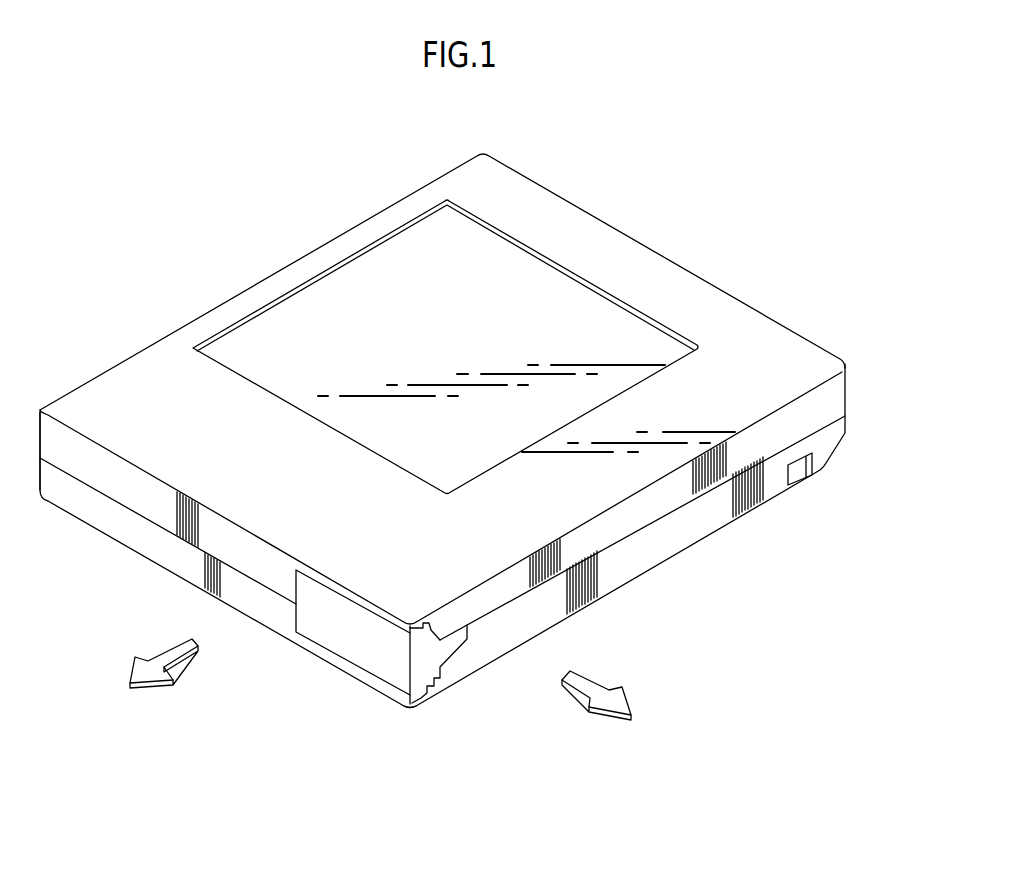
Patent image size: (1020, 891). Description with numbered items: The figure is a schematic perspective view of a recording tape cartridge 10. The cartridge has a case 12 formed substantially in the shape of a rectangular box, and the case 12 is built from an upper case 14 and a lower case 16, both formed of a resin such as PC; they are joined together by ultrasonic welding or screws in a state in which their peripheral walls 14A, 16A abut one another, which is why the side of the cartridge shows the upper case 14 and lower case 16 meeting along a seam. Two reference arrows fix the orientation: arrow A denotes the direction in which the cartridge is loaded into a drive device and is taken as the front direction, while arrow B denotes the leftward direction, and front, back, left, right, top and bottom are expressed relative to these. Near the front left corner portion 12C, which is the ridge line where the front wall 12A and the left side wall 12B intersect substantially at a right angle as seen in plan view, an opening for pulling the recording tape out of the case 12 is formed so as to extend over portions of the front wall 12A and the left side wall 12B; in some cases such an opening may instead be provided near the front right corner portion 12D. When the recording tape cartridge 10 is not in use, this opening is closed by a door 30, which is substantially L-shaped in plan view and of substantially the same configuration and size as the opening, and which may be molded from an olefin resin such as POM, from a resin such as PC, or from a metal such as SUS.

The recording tape cartridge 10 is at (566, 128).
The case 12 is at (708, 597).
The front wall 12A is at (250, 567).
The left side wall 12B is at (600, 537).
The front left corner portion 12C is at (410, 706).
The front right corner portion 12D is at (40, 410).
The upper case 14 is at (690, 488).
The peripheral wall of upper case 14A is at (125, 485).
The lower case 16 is at (663, 537).
The peripheral wall of lower case 16A is at (145, 533).
The door 30 is at (370, 650).
The arrow A is at (172, 652).
The arrow B is at (586, 683).